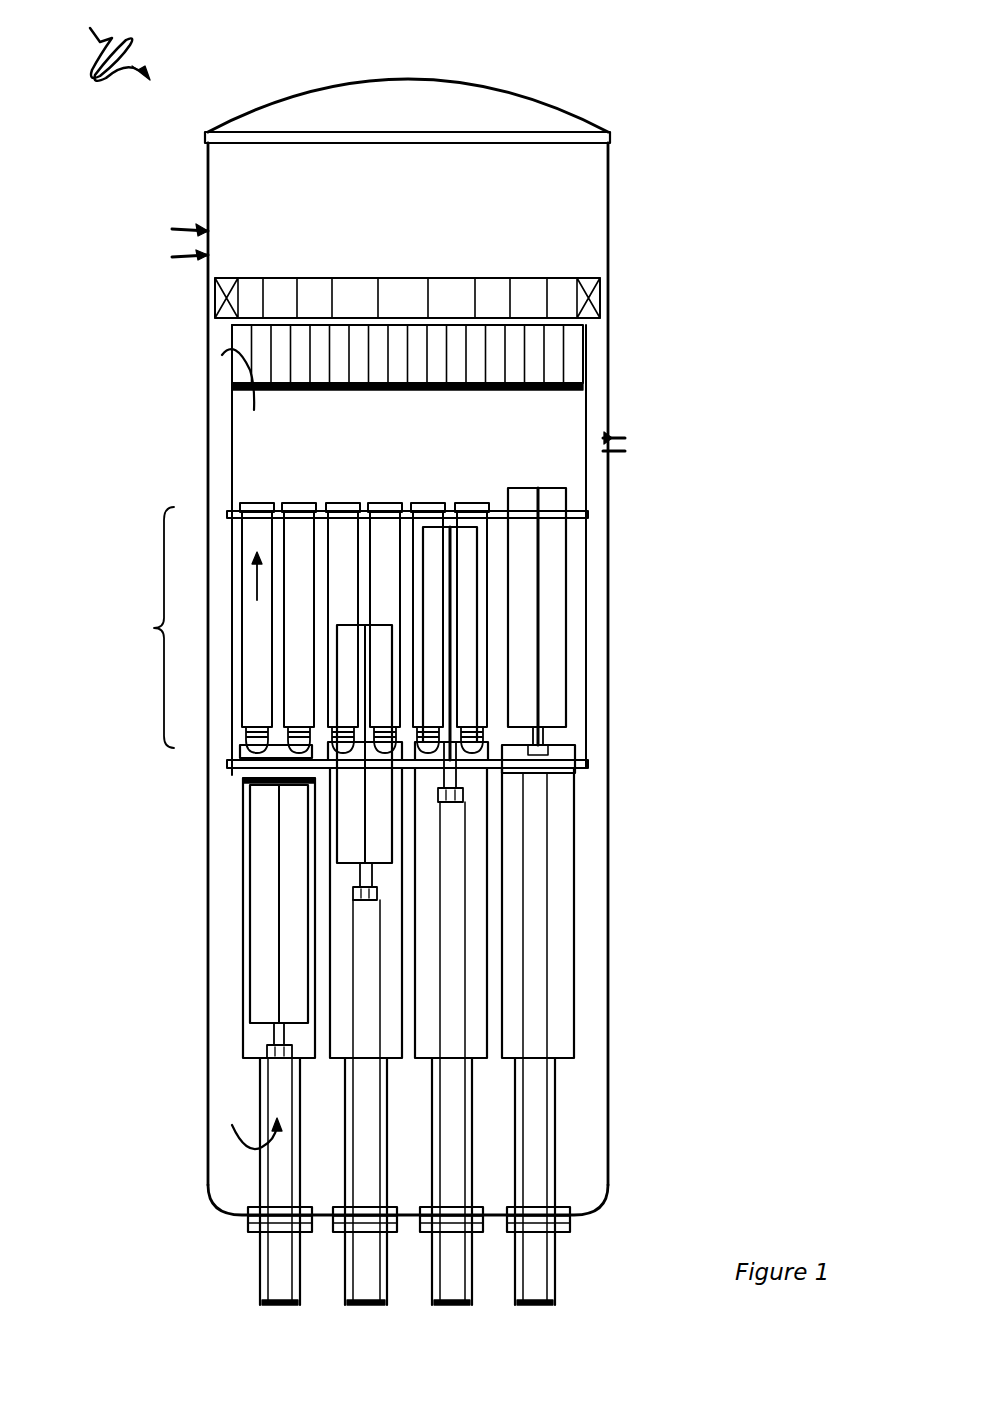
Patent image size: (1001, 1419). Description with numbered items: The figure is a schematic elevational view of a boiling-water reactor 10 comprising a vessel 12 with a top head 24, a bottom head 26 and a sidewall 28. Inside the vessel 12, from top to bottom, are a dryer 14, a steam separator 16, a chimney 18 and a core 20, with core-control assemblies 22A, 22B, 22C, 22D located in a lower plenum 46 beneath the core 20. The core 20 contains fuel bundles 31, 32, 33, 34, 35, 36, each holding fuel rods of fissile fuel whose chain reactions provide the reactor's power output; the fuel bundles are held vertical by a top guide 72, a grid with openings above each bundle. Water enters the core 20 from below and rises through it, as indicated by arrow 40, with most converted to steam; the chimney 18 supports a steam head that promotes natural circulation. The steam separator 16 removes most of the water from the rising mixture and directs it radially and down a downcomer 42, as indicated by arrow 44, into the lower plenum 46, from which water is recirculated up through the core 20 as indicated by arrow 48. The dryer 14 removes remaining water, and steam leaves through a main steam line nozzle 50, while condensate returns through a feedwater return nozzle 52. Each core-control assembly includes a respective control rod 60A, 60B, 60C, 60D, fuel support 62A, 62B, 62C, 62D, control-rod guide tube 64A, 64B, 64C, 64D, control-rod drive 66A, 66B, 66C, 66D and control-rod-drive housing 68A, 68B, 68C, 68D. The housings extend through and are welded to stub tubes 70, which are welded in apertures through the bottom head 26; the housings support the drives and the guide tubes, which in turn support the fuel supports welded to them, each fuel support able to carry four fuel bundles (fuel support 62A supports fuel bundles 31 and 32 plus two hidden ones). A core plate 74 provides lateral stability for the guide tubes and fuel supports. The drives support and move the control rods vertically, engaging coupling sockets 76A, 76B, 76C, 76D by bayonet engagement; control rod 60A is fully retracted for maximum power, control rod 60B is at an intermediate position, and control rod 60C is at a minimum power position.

The boiling-water reactor 10 is at (104, 42).
The vessel 12 is at (608, 337).
The dryer 14 is at (568, 278).
The steam separator 16 is at (416, 325).
The chimney 18 is at (415, 421).
The core 20 is at (144, 627).
The core-control assembly 22A is at (310, 950).
The core-control assembly 22B is at (397, 833).
The core-control assembly 22C is at (488, 668).
The core-control assembly 22D is at (566, 610).
The top head 24 is at (440, 82).
The bottom head 26 is at (222, 1214).
The sidewall 28 is at (609, 243).
The fuel bundle 31 is at (247, 503).
The fuel bundle 32 is at (307, 503).
The fuel bundle 33 is at (340, 503).
The fuel bundle 34 is at (377, 503).
The fuel bundle 35 is at (437, 503).
The fuel bundle 36 is at (483, 503).
The arrow 40 is at (257, 597).
The downcomer 42 is at (216, 476).
The arrow 44 is at (209, 360).
The lower plenum 46 is at (232, 1160).
The arrow 48 is at (232, 1125).
The main steam line nozzle 50 is at (176, 259).
The feedwater return nozzle 52 is at (613, 440).
The control rod 60A is at (252, 870).
The control rod 60B is at (393, 863).
The control rod 60C is at (478, 625).
The control rod 60D is at (568, 560).
The fuel support 62A is at (243, 778).
The fuel support 62B is at (330, 787).
The fuel support 62C is at (490, 775).
The fuel support 62D is at (578, 758).
The control-rod guide tube 64A is at (243, 935).
The control-rod guide tube 64B is at (330, 980).
The control-rod guide tube 64C is at (488, 970).
The control-rod guide tube 64D is at (573, 1033).
The control-rod drive 66A is at (275, 1075).
The control-rod drive 66B is at (368, 1130).
The control-rod drive 66C is at (452, 1102).
The control-rod drive 66D is at (540, 1092).
The control-rod-drive housing 68A is at (260, 1250).
The control-rod-drive housing 68B is at (345, 1288).
The control-rod-drive housing 68C is at (473, 1298).
The control-rod-drive housing 68D is at (560, 1277).
The stub tube 70 is at (572, 1218).
The top guide 72 is at (589, 515).
The core plate 74 is at (590, 765).
The coupling socket 76A is at (270, 1050).
The coupling socket 76B is at (355, 893).
The coupling socket 76C is at (463, 797).
The coupling socket 76D is at (546, 742).